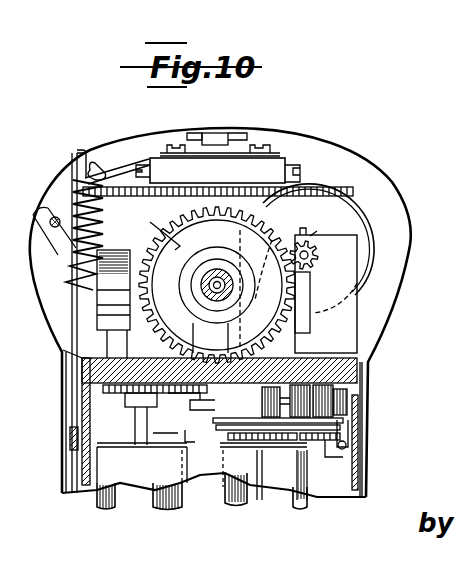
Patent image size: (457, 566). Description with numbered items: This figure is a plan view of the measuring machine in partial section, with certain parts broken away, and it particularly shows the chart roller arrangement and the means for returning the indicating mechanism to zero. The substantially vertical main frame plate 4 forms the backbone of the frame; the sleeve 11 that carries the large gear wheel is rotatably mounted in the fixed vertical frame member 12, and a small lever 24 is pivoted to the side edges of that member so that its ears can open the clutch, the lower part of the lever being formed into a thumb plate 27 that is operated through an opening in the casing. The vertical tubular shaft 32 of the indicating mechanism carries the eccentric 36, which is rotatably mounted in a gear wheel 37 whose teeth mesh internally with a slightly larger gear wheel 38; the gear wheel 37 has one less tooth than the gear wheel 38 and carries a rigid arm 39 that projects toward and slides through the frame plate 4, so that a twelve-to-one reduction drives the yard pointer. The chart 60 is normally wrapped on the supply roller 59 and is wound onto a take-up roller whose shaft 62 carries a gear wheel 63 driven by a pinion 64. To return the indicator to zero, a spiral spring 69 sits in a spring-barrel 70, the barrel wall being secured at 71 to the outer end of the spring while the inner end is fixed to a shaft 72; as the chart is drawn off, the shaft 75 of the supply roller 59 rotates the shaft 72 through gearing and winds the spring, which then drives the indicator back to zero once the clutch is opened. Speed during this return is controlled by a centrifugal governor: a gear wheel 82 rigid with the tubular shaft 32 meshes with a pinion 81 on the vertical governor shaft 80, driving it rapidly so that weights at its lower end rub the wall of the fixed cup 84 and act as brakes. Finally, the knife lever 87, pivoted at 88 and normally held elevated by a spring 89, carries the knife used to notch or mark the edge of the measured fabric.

The main frame plate 4 is at (352, 366).
The sleeve 11 is at (136, 431).
The fixed vertical frame member 12 is at (218, 164).
The lever 24 is at (143, 160).
The thumb plate 27 is at (241, 134).
The tubular shaft 32 is at (229, 296).
The eccentric 36 is at (200, 235).
The gear wheel 37 is at (158, 224).
The gear wheel 38 is at (172, 245).
The arm 39 is at (214, 291).
The supply roller 59 is at (341, 182).
The chart 60 is at (200, 474).
The shaft 62 is at (148, 418).
The gear wheel 63 is at (113, 384).
The pinion 64 is at (184, 417).
The spiral spring 69 is at (350, 417).
The spring-barrel 70 is at (347, 390).
The securing point of spring outer end 71 is at (350, 408).
The shaft 72 is at (305, 372).
The shaft of supply roller 75 is at (254, 507).
The governor shaft 80 is at (308, 256).
The pinion 81 is at (313, 237).
The gear wheel 82 is at (268, 230).
The fixed cup 84 is at (364, 272).
The knife lever 87 is at (77, 393).
The pivot 88 is at (105, 298).
The spring 89 is at (86, 193).